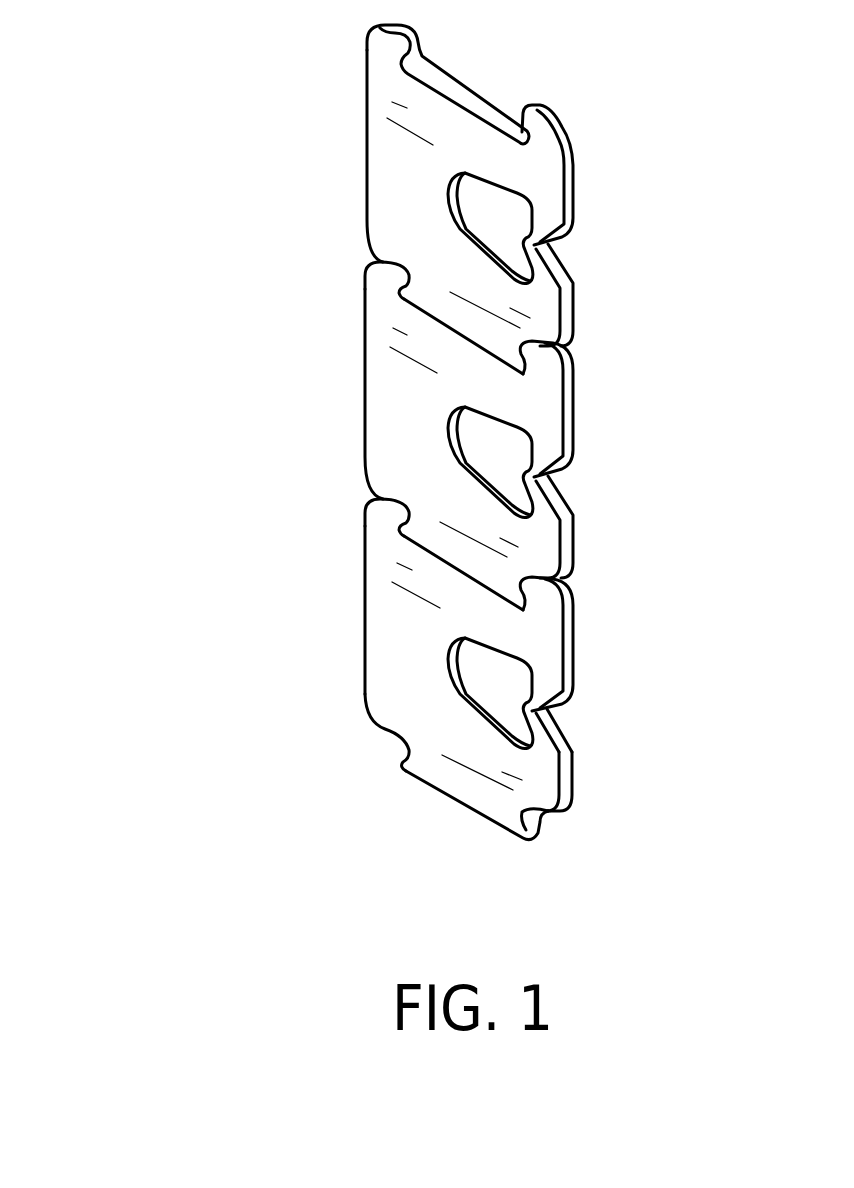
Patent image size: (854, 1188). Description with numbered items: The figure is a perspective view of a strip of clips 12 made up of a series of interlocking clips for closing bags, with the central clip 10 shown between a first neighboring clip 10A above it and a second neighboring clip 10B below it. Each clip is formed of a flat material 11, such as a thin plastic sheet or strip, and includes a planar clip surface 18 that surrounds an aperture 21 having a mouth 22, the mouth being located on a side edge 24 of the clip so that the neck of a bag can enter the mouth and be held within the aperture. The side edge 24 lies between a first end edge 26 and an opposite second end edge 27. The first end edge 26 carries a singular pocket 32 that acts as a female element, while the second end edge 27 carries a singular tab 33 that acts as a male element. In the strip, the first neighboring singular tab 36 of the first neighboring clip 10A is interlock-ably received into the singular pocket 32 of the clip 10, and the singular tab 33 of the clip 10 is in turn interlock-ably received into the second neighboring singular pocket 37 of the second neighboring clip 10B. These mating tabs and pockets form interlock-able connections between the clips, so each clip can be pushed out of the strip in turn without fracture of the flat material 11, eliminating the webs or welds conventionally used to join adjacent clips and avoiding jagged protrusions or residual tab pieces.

The strip of clips 12 is at (213, 418).
The first neighboring clip 10A is at (392, 181).
The clip 10 is at (380, 427).
The second neighboring clip 10B is at (387, 660).
The flat material 11 is at (387, 323).
The planar clip surface 18 is at (383, 447).
The second end edge 27 is at (387, 730).
The singular tab 33 is at (503, 585).
The first end edge 26 is at (540, 112).
The first neighboring singular tab 36 is at (503, 348).
The singular pocket 32 is at (526, 378).
The second neighboring singular pocket 37 is at (525, 612).
The aperture 21 is at (512, 688).
The mouth 22 is at (553, 705).
The side edge 24 is at (572, 792).